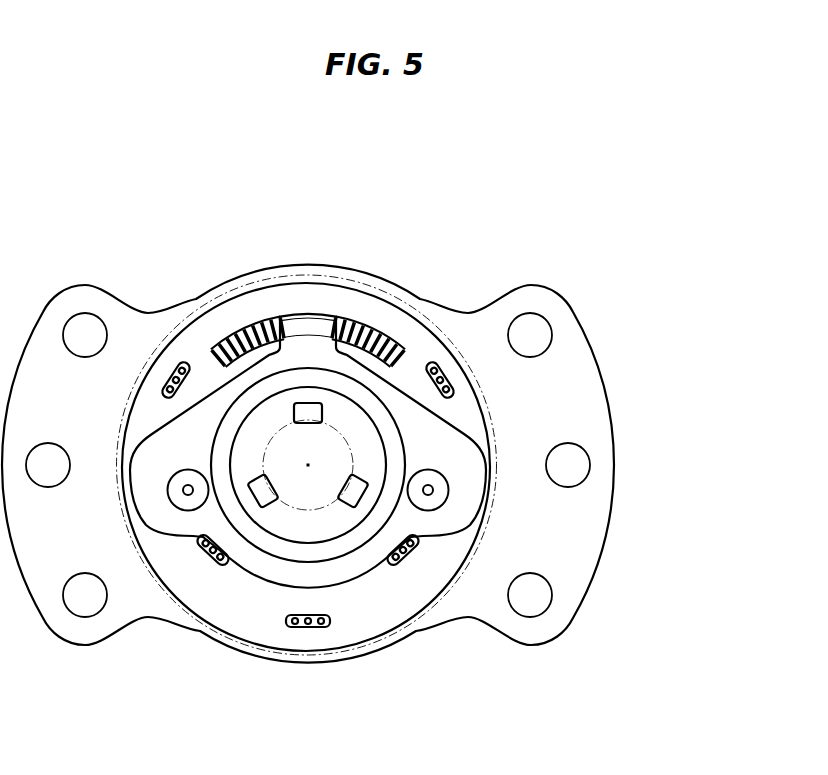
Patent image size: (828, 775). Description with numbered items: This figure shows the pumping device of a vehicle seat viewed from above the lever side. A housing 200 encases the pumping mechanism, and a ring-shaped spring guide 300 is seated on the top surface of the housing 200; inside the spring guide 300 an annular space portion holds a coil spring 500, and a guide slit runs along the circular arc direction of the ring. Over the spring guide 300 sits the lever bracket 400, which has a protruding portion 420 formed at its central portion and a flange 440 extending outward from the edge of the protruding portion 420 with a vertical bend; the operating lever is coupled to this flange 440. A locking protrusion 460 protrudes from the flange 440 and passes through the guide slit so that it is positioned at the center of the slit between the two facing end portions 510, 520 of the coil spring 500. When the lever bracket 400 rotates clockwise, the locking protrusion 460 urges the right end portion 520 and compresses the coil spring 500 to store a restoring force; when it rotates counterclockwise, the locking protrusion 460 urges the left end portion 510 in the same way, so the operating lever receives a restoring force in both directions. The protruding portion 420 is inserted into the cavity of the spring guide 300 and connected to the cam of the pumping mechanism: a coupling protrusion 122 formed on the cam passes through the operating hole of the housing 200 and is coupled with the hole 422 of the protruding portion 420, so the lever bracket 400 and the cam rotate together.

The housing 200 is at (543, 302).
The coil spring 500 is at (203, 291).
The spring guide 300 is at (410, 330).
The left end portion of the coil spring 510 is at (262, 322).
The right end portion of the coil spring 520 is at (347, 327).
The locking protrusion 460 is at (309, 326).
The lever bracket 400 is at (398, 440).
The flange 440 is at (470, 477).
The protruding portion 420 is at (328, 525).
The coupling protrusion 122 is at (263, 497).
The hole 422 is at (352, 495).